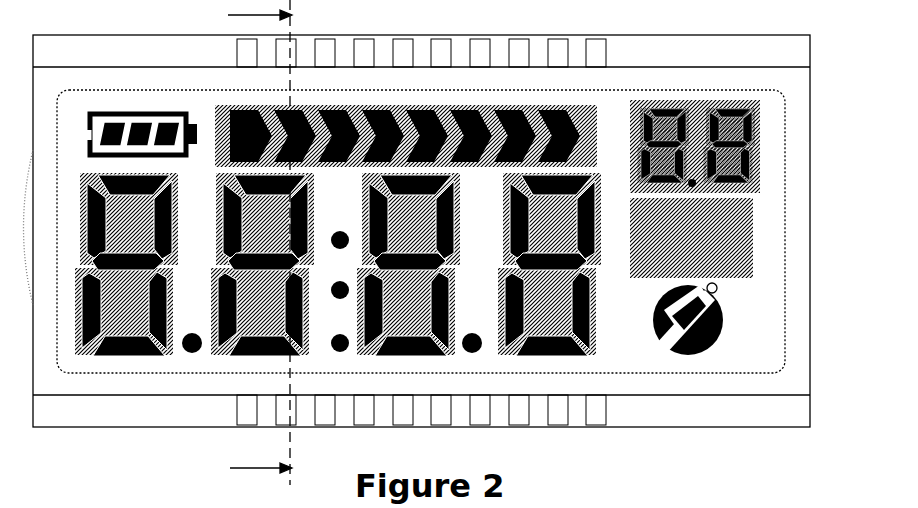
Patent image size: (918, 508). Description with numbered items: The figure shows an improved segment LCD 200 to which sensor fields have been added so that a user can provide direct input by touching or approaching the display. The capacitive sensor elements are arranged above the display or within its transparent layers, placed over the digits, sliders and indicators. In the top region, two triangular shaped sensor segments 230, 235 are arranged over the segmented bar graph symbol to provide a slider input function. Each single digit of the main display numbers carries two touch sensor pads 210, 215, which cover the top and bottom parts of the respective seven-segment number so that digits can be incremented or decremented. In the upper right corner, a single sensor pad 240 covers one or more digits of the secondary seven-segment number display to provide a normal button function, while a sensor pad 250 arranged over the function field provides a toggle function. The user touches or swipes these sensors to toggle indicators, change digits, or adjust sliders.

The LCD 200 is at (417, 242).
The touch sensor pad 210 is at (84, 192).
The touch sensor pad 215 is at (76, 284).
The triangular shaped sensor segment 230 is at (426, 115).
The triangular shaped sensor segment 235 is at (219, 126).
The sensor pad 240 is at (752, 105).
The sensor pad 250 is at (752, 242).